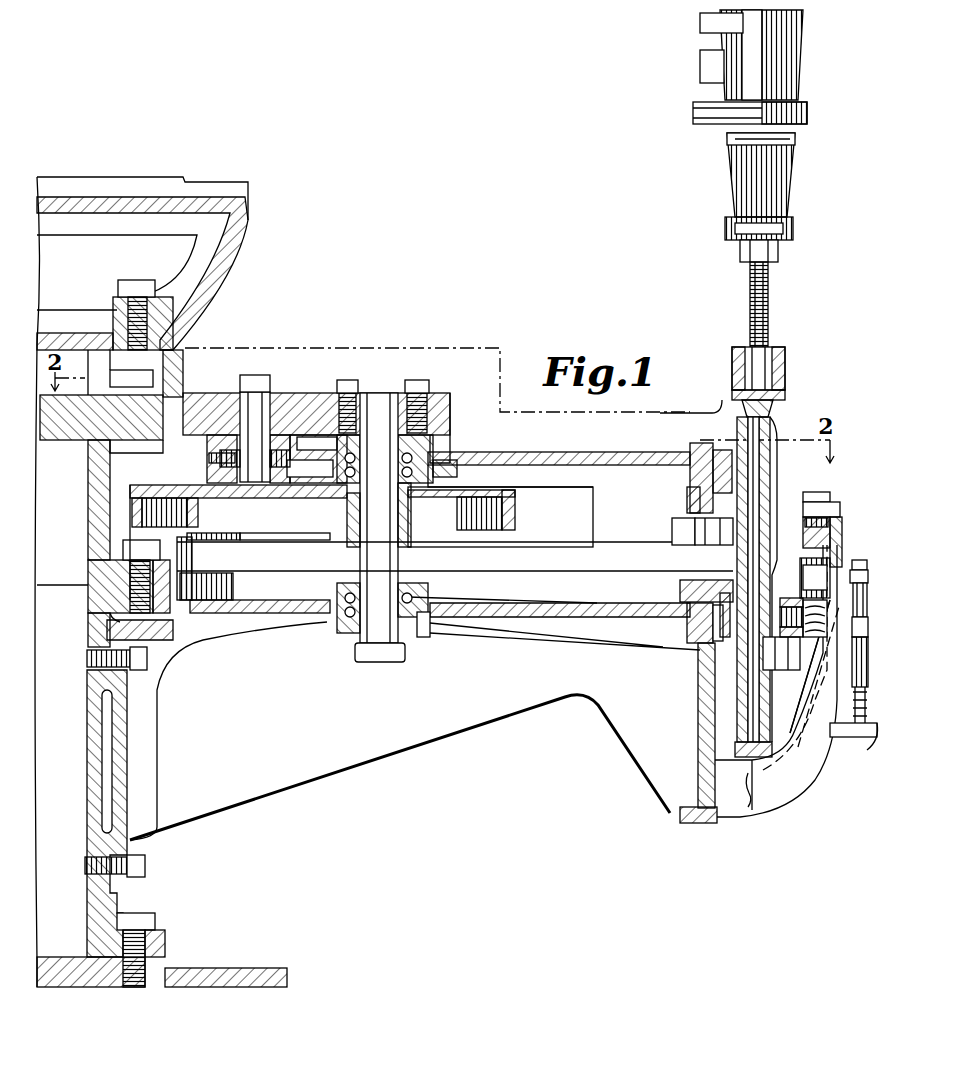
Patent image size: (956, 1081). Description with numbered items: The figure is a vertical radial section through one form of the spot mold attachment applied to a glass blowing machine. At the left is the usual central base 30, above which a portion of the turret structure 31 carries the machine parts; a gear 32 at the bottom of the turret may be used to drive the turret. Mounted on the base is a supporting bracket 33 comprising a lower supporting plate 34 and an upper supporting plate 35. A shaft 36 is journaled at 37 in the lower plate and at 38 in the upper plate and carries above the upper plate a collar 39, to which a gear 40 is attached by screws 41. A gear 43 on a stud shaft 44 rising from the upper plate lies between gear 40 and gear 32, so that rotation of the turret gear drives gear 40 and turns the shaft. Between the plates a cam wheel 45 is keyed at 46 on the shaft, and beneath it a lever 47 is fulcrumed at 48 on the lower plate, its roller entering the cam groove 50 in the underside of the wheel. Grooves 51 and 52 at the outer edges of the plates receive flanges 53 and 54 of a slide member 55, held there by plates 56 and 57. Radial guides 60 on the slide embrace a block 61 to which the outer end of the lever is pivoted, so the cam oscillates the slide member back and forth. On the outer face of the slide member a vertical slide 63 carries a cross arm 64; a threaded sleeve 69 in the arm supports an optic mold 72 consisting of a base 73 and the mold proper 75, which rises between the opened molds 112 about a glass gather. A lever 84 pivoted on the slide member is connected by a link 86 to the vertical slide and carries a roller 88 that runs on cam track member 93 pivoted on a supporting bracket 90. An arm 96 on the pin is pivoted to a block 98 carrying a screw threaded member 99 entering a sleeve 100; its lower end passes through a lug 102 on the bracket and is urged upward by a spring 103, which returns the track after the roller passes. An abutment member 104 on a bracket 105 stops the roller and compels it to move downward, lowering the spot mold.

The central base 30 is at (95, 603).
The turret structure 31 is at (235, 256).
The gear 32 is at (183, 343).
The supporting bracket 33 is at (258, 788).
The lower supporting plate 34 is at (493, 620).
The upper supporting plate 35 is at (520, 452).
The shaft 36 is at (368, 551).
The journal 37 is at (418, 603).
The journal 38 is at (430, 455).
The collar 39 is at (388, 410).
The gear 40 is at (447, 403).
The screws 41 is at (348, 390).
The gear 43 is at (303, 398).
The stud shaft 44 is at (243, 418).
The cam wheel 45 is at (515, 508).
The key 46 is at (350, 510).
The lever 47 is at (614, 553).
The fulcrum 48 is at (198, 533).
The cam groove 50 is at (476, 490).
The groove 51 is at (698, 623).
The groove 52 is at (698, 468).
The flange 53 is at (710, 638).
The flange 54 is at (688, 496).
The slide member 55 is at (713, 585).
The plate 56 is at (722, 640).
The plate 57 is at (720, 428).
The radial guides 60 is at (678, 522).
The block 61 is at (698, 536).
The slide 63 is at (778, 470).
The cross arm 64 is at (785, 368).
The sleeve 69 is at (768, 303).
The optic mold 72 is at (791, 160).
The base 73 is at (779, 253).
The mold proper 75 is at (790, 211).
The lever 84 is at (788, 670).
The link 86 is at (768, 672).
The roller 88 is at (803, 616).
The supporting bracket 90 is at (753, 797).
The cam track member 93 is at (803, 553).
The arm 96 is at (857, 558).
The block 98 is at (866, 598).
The screw threaded member 99 is at (866, 622).
The sleeve 100 is at (864, 673).
The lug 102 is at (843, 738).
The spring 103 is at (870, 752).
The abutment member 104 is at (823, 498).
The bracket 105 is at (841, 518).
The molds 112 is at (788, 68).